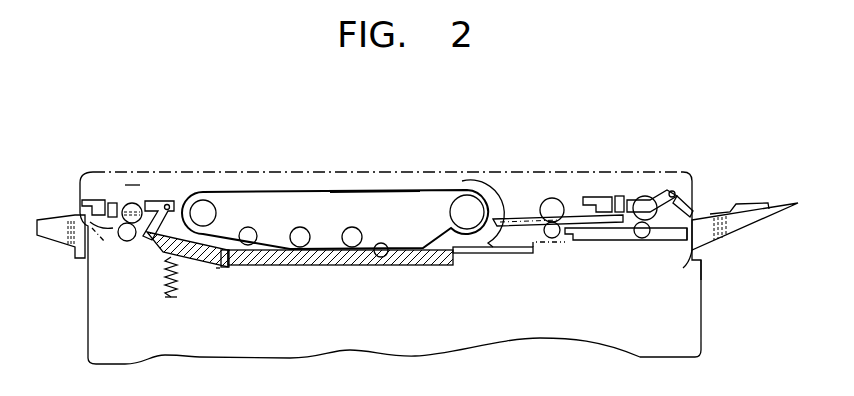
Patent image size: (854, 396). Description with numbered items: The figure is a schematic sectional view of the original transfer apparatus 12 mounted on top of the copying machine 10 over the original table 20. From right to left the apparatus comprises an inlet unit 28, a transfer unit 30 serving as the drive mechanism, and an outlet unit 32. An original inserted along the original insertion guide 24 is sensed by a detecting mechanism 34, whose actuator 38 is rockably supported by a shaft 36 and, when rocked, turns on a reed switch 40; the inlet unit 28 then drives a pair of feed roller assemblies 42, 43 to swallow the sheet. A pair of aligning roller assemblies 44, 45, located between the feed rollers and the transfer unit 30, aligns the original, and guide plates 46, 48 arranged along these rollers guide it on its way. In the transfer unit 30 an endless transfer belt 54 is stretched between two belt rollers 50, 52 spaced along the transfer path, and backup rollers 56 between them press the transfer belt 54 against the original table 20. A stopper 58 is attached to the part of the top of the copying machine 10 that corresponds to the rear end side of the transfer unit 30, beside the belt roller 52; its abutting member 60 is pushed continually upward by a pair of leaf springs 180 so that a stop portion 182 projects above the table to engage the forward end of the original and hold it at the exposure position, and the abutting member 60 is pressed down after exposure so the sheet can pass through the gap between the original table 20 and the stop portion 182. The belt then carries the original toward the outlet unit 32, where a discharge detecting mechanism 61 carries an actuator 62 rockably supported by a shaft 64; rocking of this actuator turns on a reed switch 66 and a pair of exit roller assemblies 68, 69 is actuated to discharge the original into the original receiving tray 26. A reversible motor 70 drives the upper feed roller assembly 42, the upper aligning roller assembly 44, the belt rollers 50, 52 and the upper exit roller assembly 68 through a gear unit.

The copying machine 10 is at (693, 328).
The original transfer apparatus 12 is at (505, 170).
The original table 20 is at (385, 256).
The original insertion guide 24 is at (768, 203).
The original receiving tray 26 is at (55, 230).
The inlet unit 28 is at (632, 184).
The transfer unit 30 is at (360, 190).
The outlet unit 32 is at (135, 185).
The detecting mechanism 34 is at (617, 185).
The shaft 36 is at (676, 190).
The actuator 38 is at (684, 242).
The reed switch 40 is at (598, 197).
The upper feed roller assembly 42 is at (647, 198).
The feed roller assembly 43 is at (642, 240).
The upper aligning roller assembly 44 is at (553, 199).
The aligning roller assembly 45 is at (552, 240).
The guide plate 46 is at (693, 250).
The guide plate 48 is at (580, 242).
The belt roller 50 is at (468, 208).
The belt roller 52 is at (207, 208).
The endless transfer belt 54 is at (407, 193).
The backup rollers 56 is at (352, 227).
The stopper 58 is at (212, 296).
The abutting member 60 is at (218, 270).
The discharge detecting mechanism 61 is at (110, 226).
The actuator 62 is at (163, 264).
The shaft 64 is at (168, 203).
The reed switch 66 is at (98, 200).
The upper exit roller assembly 68 is at (140, 203).
The exit roller assembly 69 is at (130, 243).
The reversible motor 70 is at (489, 189).
The leaf springs 180 is at (186, 290).
The stop portion 182 is at (229, 262).